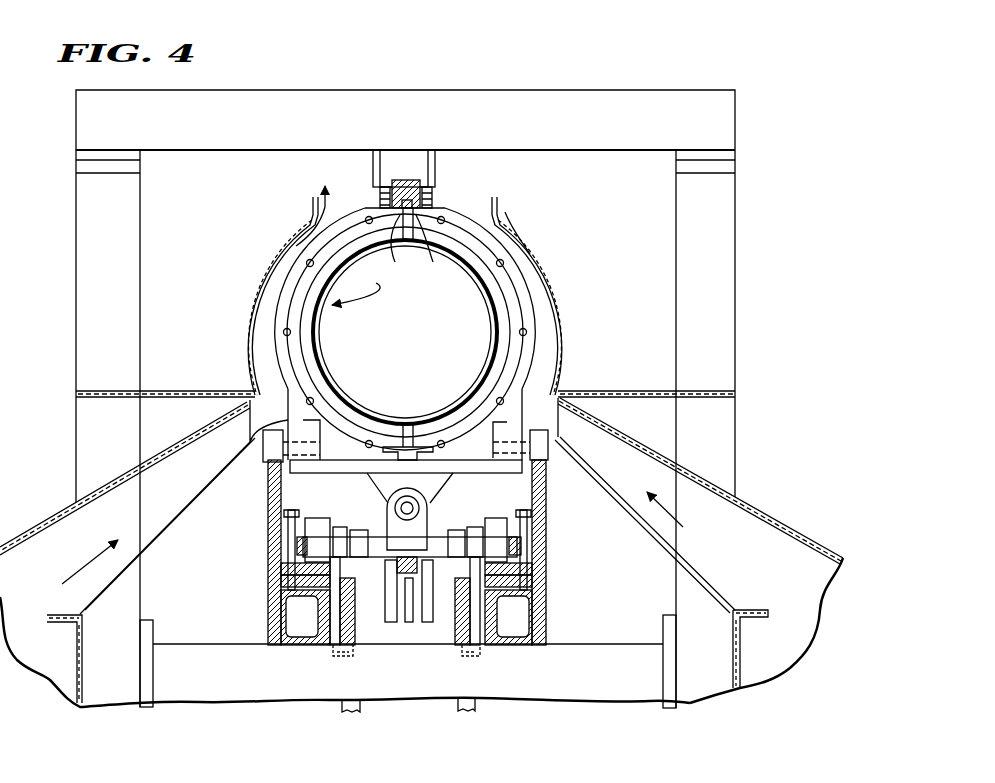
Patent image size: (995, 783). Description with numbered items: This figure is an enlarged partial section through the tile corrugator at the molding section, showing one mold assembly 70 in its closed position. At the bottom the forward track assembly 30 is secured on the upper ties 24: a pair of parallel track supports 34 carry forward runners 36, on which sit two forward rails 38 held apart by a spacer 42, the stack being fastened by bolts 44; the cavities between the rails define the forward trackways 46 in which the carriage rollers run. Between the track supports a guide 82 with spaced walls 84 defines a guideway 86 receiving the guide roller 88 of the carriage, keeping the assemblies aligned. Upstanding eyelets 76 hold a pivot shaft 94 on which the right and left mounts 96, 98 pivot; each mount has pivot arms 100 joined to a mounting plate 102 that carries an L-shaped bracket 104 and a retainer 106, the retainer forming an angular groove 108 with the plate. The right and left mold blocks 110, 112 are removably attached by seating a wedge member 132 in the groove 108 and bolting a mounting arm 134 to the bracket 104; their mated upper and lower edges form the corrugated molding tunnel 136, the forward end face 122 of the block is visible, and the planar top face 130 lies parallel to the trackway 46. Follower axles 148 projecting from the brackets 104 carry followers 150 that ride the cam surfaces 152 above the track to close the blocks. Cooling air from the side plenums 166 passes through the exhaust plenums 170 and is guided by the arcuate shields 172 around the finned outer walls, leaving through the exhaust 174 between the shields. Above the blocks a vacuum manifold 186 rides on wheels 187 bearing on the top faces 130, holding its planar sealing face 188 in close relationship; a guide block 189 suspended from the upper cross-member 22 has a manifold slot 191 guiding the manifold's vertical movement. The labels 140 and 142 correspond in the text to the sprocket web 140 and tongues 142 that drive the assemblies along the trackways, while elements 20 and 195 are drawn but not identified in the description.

The frame side wall 20 is at (139, 239).
The upper cross-members 22 is at (626, 120).
The upper ties 24 is at (212, 681).
The forward track assembly 30 is at (233, 535).
The track supports 34 is at (268, 622).
The forward runners 36 is at (268, 582).
The forward rails 38 is at (268, 524).
The spacer 42 is at (268, 548).
The bolts 44 is at (407, 538).
The forward trackways 46 is at (409, 530).
The mold assembly 70 is at (530, 257).
The eyelets 76 is at (410, 530).
The guide 82 is at (410, 640).
The spaced walls 84 is at (430, 635).
The guideway 86 is at (405, 612).
The guide roller 88 is at (407, 563).
The pivot shaft 94 is at (425, 474).
The right mount 96 is at (470, 446).
The left mount 98 is at (278, 490).
The pivot arms 100 is at (400, 504).
The mounting plate 102 is at (547, 481).
The L-shaped brackets 104 is at (330, 446).
The retainer 106 is at (428, 452).
The angular groove 108 is at (360, 475).
The right mold block 110 is at (487, 304).
The left mold block 112 is at (356, 284).
The forward end face 122 is at (300, 376).
The top face 130 is at (440, 210).
The wedge member 132 is at (365, 455).
The mounting arm 134 is at (276, 428).
The corrugated molding tunnel 136 is at (414, 335).
The web 140 is at (340, 650).
The tongues 142 is at (344, 574).
The follower axles 148 is at (526, 420).
The followers 150 is at (263, 447).
The cam surfaces 152 is at (263, 460).
The side plenums 166 is at (63, 652).
The exhaust plenums 170 is at (79, 558).
The arcuate shields 172 is at (256, 300).
The exhaust 174 is at (504, 220).
The vacuum manifold 186 is at (440, 251).
The wheels 187 is at (384, 200).
The planar sealing face 188 is at (396, 183).
The guide blocks 189 is at (423, 165).
The manifold slot 191 is at (420, 182).
The clamp arm 195 is at (401, 247).